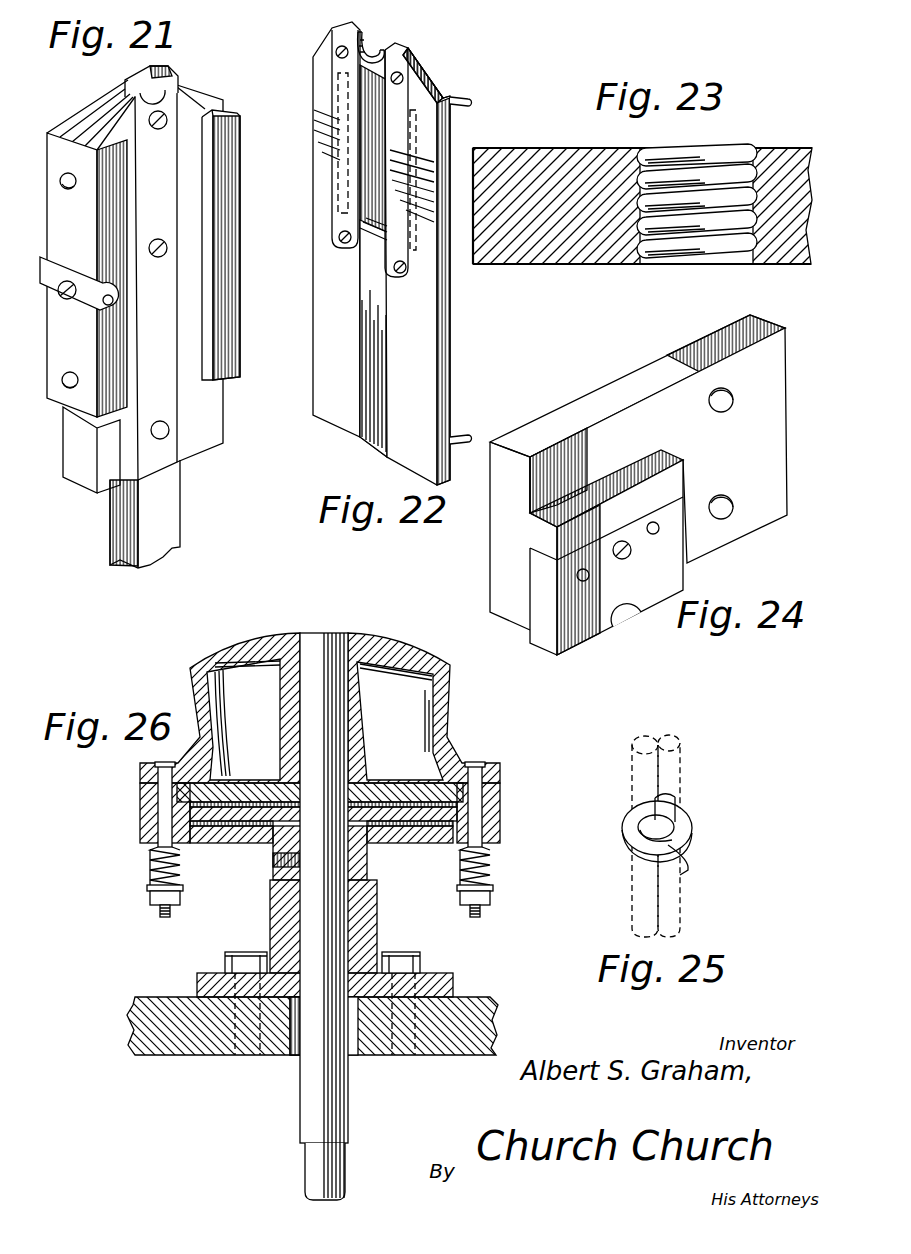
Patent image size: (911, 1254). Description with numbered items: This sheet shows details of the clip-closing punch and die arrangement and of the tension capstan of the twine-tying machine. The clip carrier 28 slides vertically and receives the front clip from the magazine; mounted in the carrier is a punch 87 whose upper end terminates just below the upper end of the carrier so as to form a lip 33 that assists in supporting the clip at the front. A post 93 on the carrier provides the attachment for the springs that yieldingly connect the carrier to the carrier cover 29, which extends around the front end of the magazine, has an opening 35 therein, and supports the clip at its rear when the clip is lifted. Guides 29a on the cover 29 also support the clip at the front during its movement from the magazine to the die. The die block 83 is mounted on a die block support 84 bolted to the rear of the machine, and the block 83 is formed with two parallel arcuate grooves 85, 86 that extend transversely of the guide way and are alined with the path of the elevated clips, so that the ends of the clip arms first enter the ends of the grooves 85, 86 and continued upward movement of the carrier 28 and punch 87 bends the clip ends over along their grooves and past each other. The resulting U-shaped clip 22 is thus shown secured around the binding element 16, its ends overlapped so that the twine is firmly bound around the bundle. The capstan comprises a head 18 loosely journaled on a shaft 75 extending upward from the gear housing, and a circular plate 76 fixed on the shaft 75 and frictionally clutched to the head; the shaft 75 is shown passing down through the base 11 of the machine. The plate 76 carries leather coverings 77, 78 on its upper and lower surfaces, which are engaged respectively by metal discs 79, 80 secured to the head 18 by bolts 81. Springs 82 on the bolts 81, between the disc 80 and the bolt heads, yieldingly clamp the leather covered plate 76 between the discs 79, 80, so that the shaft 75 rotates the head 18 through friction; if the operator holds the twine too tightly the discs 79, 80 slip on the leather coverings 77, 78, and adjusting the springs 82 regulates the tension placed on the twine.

In FIG. 21, the lip 33 is at (135, 91).
In FIG. 21, the clip carrier 28 is at (188, 100).
In FIG. 21, the punch 87 is at (162, 183).
In FIG. 21, the post 93 is at (90, 303).
In FIG. 22, the guides 29a is at (384, 27).
In FIG. 22, the carrier cover 29 is at (427, 70).
In FIG. 22, the opening 35 is at (367, 88).
In FIG. 23, the die block 83 is at (543, 253).
In FIG. 24, the die block 83 is at (602, 624).
In FIG. 23, the arcuate groove 85 is at (617, 253).
In FIG. 23, the arcuate groove 86 is at (747, 207).
In FIG. 24, the die block support 84 is at (638, 472).
In FIG. 25, the rod 16 is at (680, 773).
In FIG. 25, the U-shaped clip 22 is at (690, 833).
In FIG. 26, the capstan head 18 is at (385, 650).
In FIG. 26, the metal disc 79 is at (246, 778).
In FIG. 26, the leather covering 77 is at (383, 800).
In FIG. 26, the circular plate 76 is at (395, 814).
In FIG. 26, the leather covering 78 is at (435, 828).
In FIG. 26, the metal disc 80 is at (241, 843).
In FIG. 26, the bolt 81 is at (162, 813).
In FIG. 26, the spring 82 is at (150, 848).
In FIG. 26, the base plate 11 is at (207, 1048).
In FIG. 26, the shaft 75 is at (302, 1090).